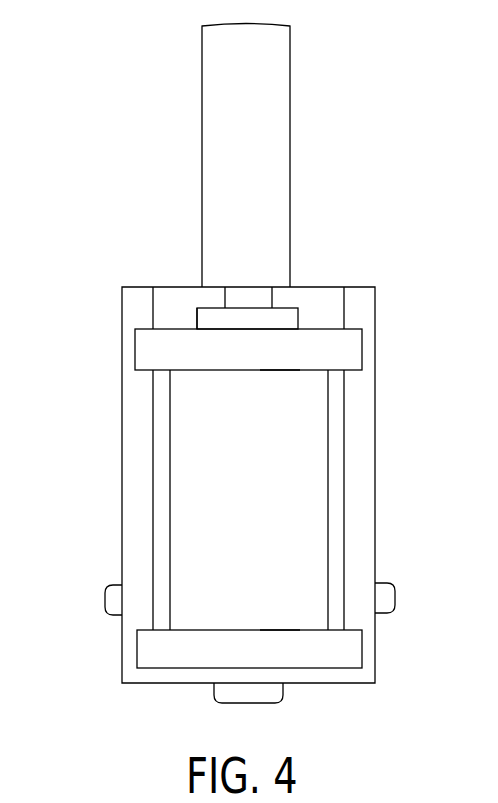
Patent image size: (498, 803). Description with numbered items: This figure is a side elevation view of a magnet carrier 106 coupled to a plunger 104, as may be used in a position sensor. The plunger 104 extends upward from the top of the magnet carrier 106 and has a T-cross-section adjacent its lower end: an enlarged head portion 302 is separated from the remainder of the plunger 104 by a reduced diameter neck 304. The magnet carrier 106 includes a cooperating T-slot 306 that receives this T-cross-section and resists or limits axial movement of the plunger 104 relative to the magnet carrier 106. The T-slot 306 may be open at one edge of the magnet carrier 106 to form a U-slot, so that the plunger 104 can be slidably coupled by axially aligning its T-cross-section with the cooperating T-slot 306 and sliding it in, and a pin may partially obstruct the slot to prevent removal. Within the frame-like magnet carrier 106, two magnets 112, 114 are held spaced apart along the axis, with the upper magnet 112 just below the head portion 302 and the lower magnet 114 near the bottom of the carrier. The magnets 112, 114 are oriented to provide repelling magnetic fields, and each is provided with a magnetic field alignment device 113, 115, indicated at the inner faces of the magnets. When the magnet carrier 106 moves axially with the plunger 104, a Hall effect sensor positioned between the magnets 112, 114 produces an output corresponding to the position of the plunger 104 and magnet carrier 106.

The plunger 104 is at (290, 168).
The magnet carrier 106 is at (122, 317).
The magnet 112 is at (357, 348).
The magnetic field alignment device 113 is at (285, 362).
The magnet 114 is at (362, 657).
The magnetic field alignment device 115 is at (284, 621).
The head portion 302 is at (292, 315).
The reduced diameter neck 304 is at (253, 300).
The cooperating T-slot 306 is at (197, 315).